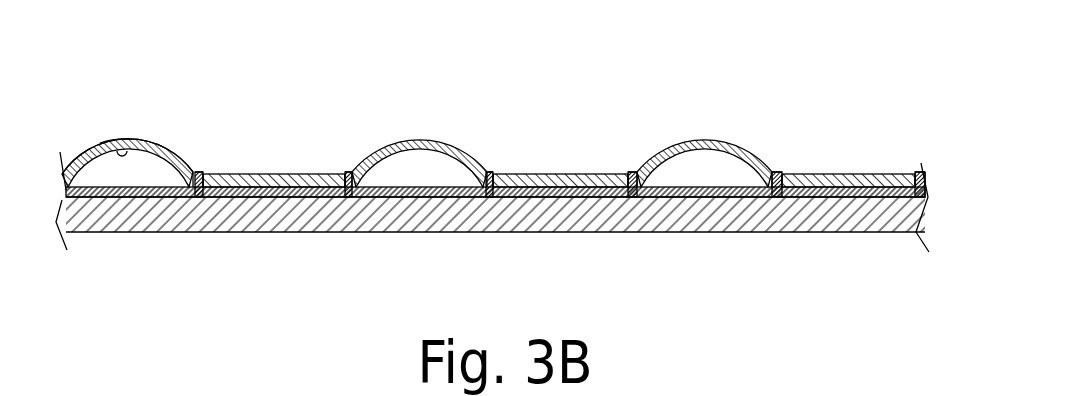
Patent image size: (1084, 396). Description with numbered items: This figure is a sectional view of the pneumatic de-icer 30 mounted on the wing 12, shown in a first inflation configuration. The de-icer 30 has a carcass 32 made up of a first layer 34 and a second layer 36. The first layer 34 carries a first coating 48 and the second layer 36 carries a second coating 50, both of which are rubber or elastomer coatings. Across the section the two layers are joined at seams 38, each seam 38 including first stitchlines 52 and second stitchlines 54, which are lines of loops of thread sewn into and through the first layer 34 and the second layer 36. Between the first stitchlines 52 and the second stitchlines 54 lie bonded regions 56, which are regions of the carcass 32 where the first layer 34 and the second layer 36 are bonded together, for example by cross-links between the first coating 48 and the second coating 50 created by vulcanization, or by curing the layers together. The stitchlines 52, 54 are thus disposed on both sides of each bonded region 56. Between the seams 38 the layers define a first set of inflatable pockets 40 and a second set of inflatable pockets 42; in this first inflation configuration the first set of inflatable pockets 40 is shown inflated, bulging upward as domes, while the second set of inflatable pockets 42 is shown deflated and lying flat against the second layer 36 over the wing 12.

The wing 12 is at (298, 232).
The de-icer 30 is at (405, 97).
The carcass 32 is at (704, 132).
The first layer 34 is at (93, 143).
The second layer 36 is at (166, 176).
The seams 38 is at (199, 208).
The first set of inflatable pockets 40 is at (118, 170).
The second set of inflatable pockets 42 is at (276, 172).
The first coating 48 is at (112, 139).
The second coating 50 is at (140, 150).
The first stitchlines 52 is at (197, 170).
The second stitchlines 54 is at (208, 176).
The bonded regions 56 is at (204, 172).